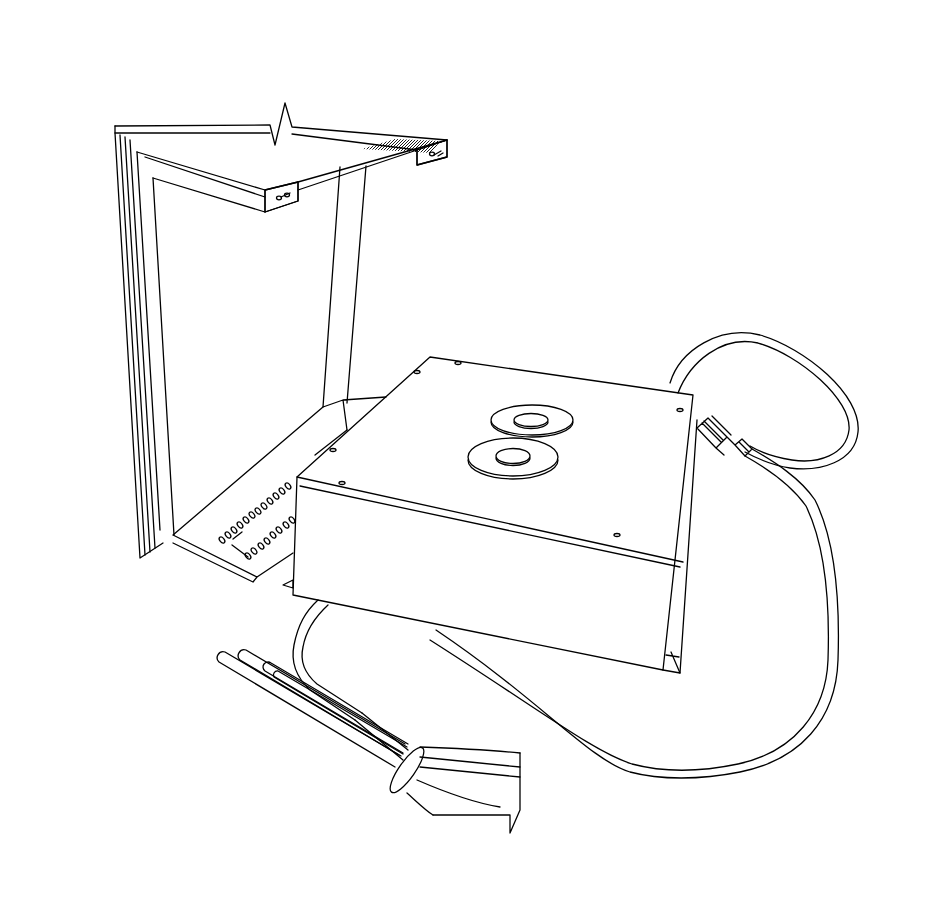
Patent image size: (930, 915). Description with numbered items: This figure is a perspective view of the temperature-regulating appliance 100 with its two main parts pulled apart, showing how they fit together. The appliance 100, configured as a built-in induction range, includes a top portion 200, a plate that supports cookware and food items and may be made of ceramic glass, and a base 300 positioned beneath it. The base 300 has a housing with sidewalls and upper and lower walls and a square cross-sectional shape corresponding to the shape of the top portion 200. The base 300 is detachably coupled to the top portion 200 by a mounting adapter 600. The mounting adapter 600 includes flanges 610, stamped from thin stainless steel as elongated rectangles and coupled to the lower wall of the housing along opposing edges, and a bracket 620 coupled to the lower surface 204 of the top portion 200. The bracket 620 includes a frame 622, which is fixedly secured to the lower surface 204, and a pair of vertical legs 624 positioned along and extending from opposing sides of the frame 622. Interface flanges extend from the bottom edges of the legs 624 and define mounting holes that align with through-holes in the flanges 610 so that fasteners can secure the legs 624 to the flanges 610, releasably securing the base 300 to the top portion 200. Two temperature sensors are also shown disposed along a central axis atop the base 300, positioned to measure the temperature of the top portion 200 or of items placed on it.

The temperature-regulating appliance 100 is at (118, 59).
The top portion 200 is at (116, 136).
The lower surface 204 is at (288, 285).
The base 300 is at (699, 493).
The mounting adapter 600 is at (410, 134).
The flanges 610 is at (673, 665).
The bracket 620 is at (152, 333).
The frame 622 is at (152, 457).
The legs 624 is at (204, 166).